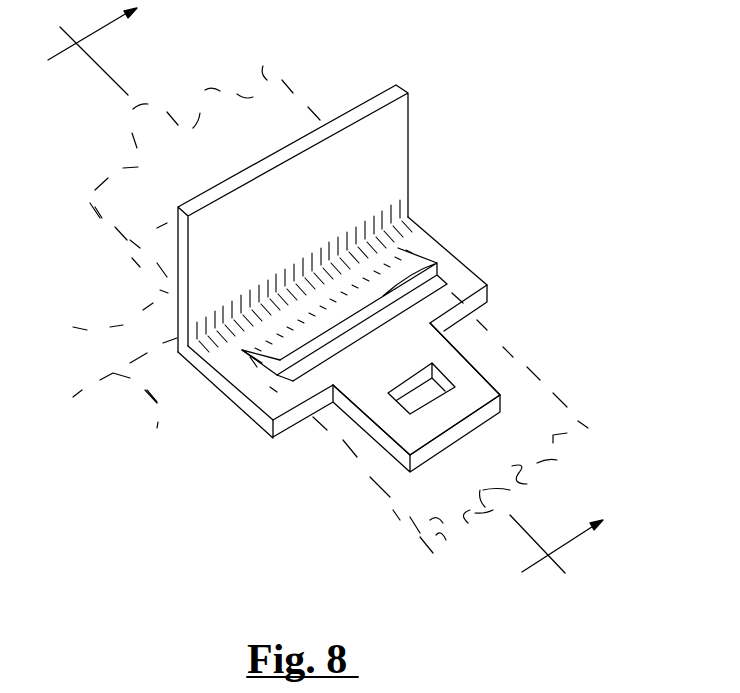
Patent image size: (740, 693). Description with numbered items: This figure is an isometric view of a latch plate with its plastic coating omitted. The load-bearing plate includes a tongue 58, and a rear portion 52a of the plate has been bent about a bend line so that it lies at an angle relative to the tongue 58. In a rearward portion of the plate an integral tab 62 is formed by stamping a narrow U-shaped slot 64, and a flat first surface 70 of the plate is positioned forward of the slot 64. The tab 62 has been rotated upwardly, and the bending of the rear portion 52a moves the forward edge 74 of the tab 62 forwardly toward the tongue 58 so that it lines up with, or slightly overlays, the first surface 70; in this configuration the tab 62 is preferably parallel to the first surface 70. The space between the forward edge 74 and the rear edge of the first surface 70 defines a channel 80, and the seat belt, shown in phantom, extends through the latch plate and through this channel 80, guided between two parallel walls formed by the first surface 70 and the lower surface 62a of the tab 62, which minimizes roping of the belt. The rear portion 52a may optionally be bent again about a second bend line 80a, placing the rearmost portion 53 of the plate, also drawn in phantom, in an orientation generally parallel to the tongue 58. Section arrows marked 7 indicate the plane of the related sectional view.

The section line 7- 7 is at (339, 286).
The rear portion 52a is at (370, 167).
The rearmost portion 53 is at (325, 309).
The tongue 58 is at (410, 436).
The tab 62 is at (320, 365).
The lower surface 62a is at (287, 362).
The U-shaped slot 64 is at (262, 363).
The first surface 70 is at (412, 335).
The forward edge 74 is at (372, 308).
The channel 80 is at (400, 297).
The second bend line 80a is at (160, 426).